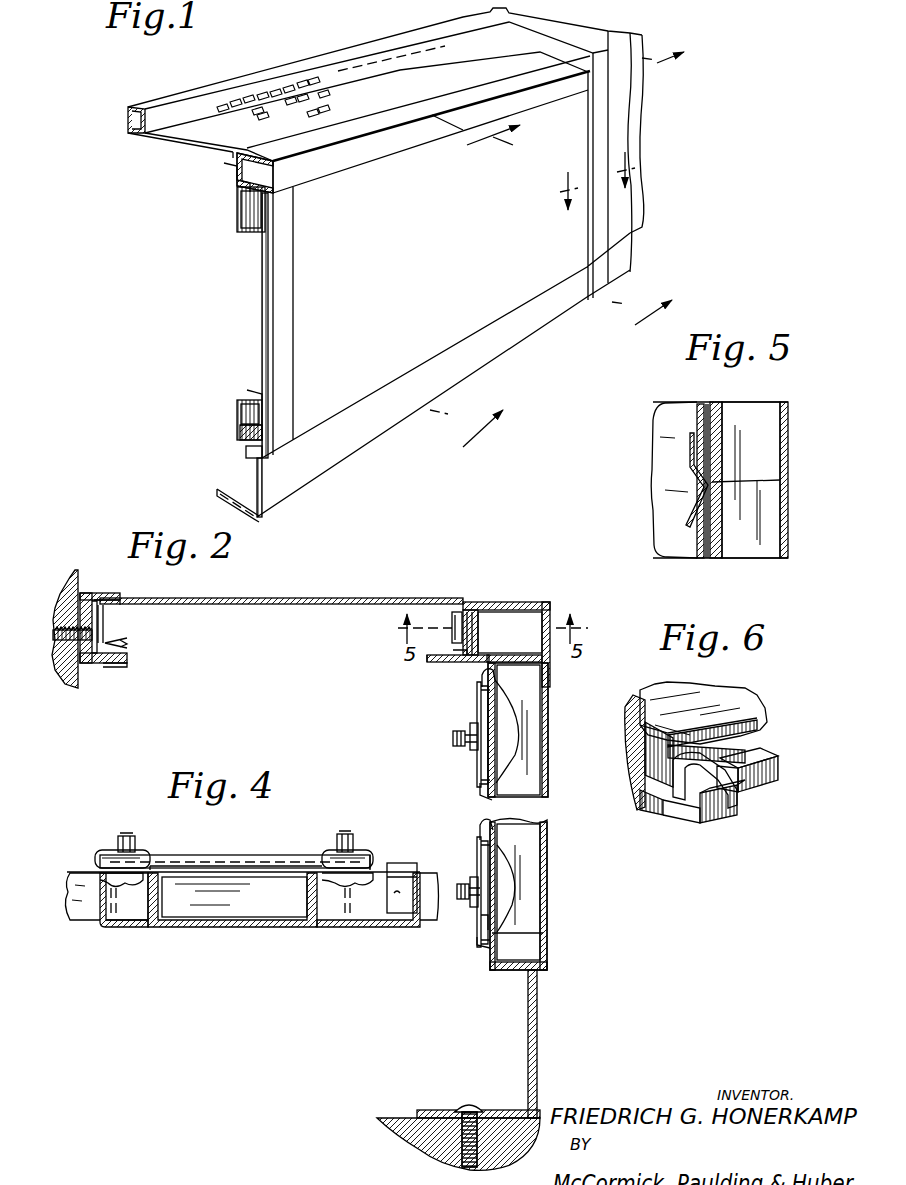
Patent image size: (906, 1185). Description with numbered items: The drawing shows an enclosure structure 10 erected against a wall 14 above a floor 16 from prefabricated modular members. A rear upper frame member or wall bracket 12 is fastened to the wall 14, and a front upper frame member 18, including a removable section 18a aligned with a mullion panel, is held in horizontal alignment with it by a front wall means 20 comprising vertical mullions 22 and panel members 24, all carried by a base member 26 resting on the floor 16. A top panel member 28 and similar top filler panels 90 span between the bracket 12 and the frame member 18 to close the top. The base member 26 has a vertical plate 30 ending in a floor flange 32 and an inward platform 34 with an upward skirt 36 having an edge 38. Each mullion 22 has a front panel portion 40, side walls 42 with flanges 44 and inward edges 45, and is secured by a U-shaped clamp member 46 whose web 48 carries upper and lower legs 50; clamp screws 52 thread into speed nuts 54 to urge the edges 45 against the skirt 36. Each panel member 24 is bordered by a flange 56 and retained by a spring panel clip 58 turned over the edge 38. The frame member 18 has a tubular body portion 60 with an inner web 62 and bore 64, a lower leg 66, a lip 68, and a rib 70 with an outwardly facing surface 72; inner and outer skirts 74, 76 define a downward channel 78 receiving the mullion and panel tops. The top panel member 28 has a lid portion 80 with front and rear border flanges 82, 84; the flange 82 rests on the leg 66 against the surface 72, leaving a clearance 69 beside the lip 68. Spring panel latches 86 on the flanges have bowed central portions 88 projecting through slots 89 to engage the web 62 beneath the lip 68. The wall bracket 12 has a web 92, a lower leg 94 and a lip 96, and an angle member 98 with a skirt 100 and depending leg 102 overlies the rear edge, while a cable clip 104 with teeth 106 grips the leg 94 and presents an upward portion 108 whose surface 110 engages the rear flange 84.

In FIG. 1, the enclosure structure 10 is at (669, 28).
In FIG. 1, the wall bracket 12 is at (161, 141).
In FIG. 2, the wall bracket 12 is at (92, 670).
In FIG. 6, the wall bracket 12 is at (668, 807).
In FIG. 2, the wall 14 is at (53, 637).
In FIG. 6, the wall 14 is at (690, 685).
In FIG. 2, the floor 16 is at (407, 1118).
In FIG. 1, the front upper frame member 18 is at (367, 117).
In FIG. 5, the front upper frame member 18 is at (725, 477).
In FIG. 1, the removable section 18a is at (598, 48).
In FIG. 1, the front wall means 20 is at (650, 155).
In FIG. 4, the front wall means 20 is at (222, 942).
In FIG. 1, the mullion 22 is at (270, 318).
In FIG. 2, the mullion 22 is at (548, 905).
In FIG. 4, the mullion 22 is at (290, 923).
In FIG. 1, the panel member 24 is at (500, 292).
In FIG. 4, the panel member 24 is at (117, 923).
In FIG. 1, the base member 26 is at (347, 440).
In FIG. 2, the base member 26 is at (538, 1062).
In FIG. 4, the base member 26 is at (77, 916).
In FIG. 1, the top panel member 28 is at (432, 62).
In FIG. 2, the top panel member 28 is at (335, 597).
In FIG. 6, the top panel member 28 is at (740, 728).
In FIG. 1, the plate 30 is at (307, 460).
In FIG. 2, the plate 30 is at (537, 1023).
In FIG. 1, the flange 32 is at (230, 491).
In FIG. 2, the flange 32 is at (437, 1108).
In FIG. 1, the platform 34 is at (247, 455).
In FIG. 2, the platform 34 is at (548, 956).
In FIG. 4, the platform 34 is at (200, 900).
In FIG. 1, the skirt 36 is at (246, 433).
In FIG. 2, the skirt 36 is at (543, 933).
In FIG. 4, the skirt 36 is at (70, 895).
In FIG. 1, the edge 38 is at (238, 423).
In FIG. 2, the edge 38 is at (480, 923).
In FIG. 4, the edge 38 is at (72, 877).
In FIG. 1, the front panel portion 40 is at (281, 246).
In FIG. 2, the front panel portion 40 is at (562, 895).
In FIG. 4, the front panel portion 40 is at (280, 925).
In FIG. 2, the side wall 42 is at (523, 835).
In FIG. 4, the side wall 42 is at (150, 890).
In FIG. 4, the flange 44 is at (95, 868).
In FIG. 2, the edge 45 is at (515, 680).
In FIG. 1, the clamp member 46 is at (247, 207).
In FIG. 2, the clamp member 46 is at (485, 763).
In FIG. 4, the clamp member 46 is at (207, 853).
In FIG. 1, the web 48 is at (239, 201).
In FIG. 2, the web 48 is at (478, 708).
In FIG. 4, the web 48 is at (230, 855).
In FIG. 1, the leg 50 is at (236, 178).
In FIG. 2, the leg 50 is at (483, 678).
In FIG. 4, the leg 50 is at (270, 867).
In FIG. 2, the clamp screw 52 is at (453, 742).
In FIG. 4, the clamp screw 52 is at (125, 837).
In FIG. 2, the speed nut 54 is at (470, 727).
In FIG. 4, the speed nut 54 is at (135, 850).
In FIG. 4, the border flange 56 is at (107, 903).
In FIG. 4, the panel clip 58 is at (435, 870).
In FIG. 2, the tubular body portion 60 is at (471, 621).
In FIG. 5, the web 62 is at (699, 548).
In FIG. 2, the web 62 is at (465, 608).
In FIG. 2, the bore 64 is at (551, 605).
In FIG. 2, the lower leg 66 is at (430, 659).
In FIG. 5, the lip 68 is at (709, 556).
In FIG. 2, the lip 68 is at (467, 600).
In FIG. 5, the clearance 69 is at (706, 405).
In FIG. 2, the clearance 69 is at (470, 606).
In FIG. 2, the rib 70 is at (460, 662).
In FIG. 2, the outwardly facing surface 72 is at (467, 657).
In FIG. 5, the inner skirt 74 is at (722, 420).
In FIG. 2, the inner skirt 74 is at (546, 719).
In FIG. 5, the outer skirt 76 is at (789, 432).
In FIG. 2, the outer skirt 76 is at (548, 680).
In FIG. 5, the channel 78 is at (750, 535).
In FIG. 2, the channel 78 is at (522, 686).
In FIG. 2, the lid portion 80 is at (265, 598).
In FIG. 5, the front border flange 82 is at (697, 420).
In FIG. 2, the front border flange 82 is at (455, 620).
In FIG. 2, the rear border flange 84 is at (100, 608).
In FIG. 6, the rear border flange 84 is at (657, 773).
In FIG. 5, the panel latch 86 is at (695, 480).
In FIG. 2, the panel latch 86 is at (478, 636).
In FIG. 5, the central portion 88 is at (782, 482).
In FIG. 5, the slot 89 is at (690, 503).
In FIG. 1, the top filler panel 90 is at (203, 131).
In FIG. 2, the web 92 is at (70, 630).
In FIG. 6, the web 92 is at (645, 763).
In FIG. 2, the lower leg 94 is at (97, 668).
In FIG. 6, the lower leg 94 is at (757, 773).
In FIG. 2, the lip 96 is at (145, 617).
In FIG. 6, the lip 96 is at (645, 740).
In FIG. 2, the angle member 98 is at (112, 593).
In FIG. 6, the angle member 98 is at (737, 700).
In FIG. 2, the skirt 100 is at (105, 597).
In FIG. 6, the skirt 100 is at (747, 705).
In FIG. 2, the depending leg 102 is at (73, 597).
In FIG. 6, the depending leg 102 is at (626, 707).
In FIG. 2, the clip 104 is at (128, 658).
In FIG. 6, the clip 104 is at (730, 813).
In FIG. 2, the tooth 106 is at (122, 664).
In FIG. 2, the upwardly projecting portion 108 is at (125, 642).
In FIG. 6, the upwardly projecting portion 108 is at (770, 792).
In FIG. 2, the outwardly facing surface 110 is at (92, 663).
In FIG. 6, the outwardly facing surface 110 is at (678, 813).